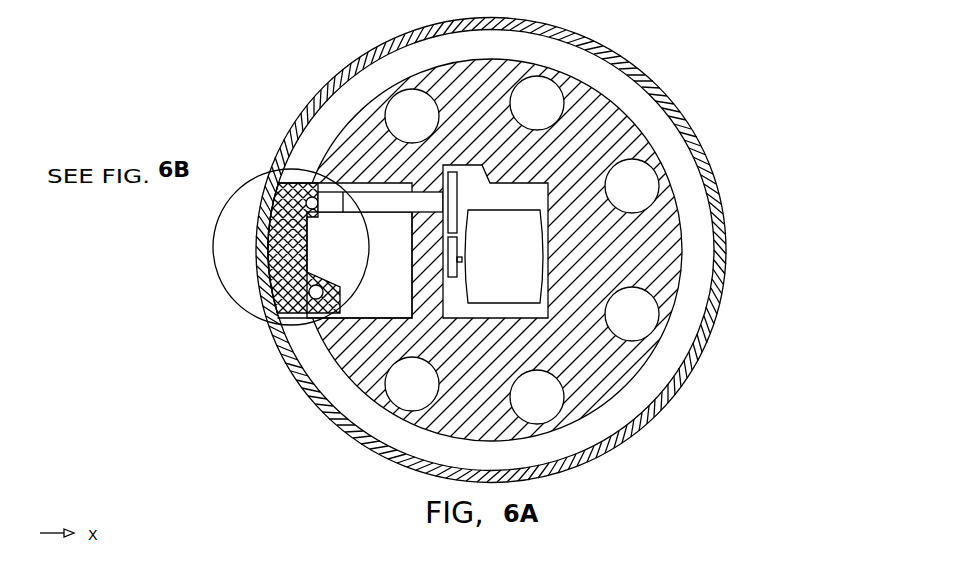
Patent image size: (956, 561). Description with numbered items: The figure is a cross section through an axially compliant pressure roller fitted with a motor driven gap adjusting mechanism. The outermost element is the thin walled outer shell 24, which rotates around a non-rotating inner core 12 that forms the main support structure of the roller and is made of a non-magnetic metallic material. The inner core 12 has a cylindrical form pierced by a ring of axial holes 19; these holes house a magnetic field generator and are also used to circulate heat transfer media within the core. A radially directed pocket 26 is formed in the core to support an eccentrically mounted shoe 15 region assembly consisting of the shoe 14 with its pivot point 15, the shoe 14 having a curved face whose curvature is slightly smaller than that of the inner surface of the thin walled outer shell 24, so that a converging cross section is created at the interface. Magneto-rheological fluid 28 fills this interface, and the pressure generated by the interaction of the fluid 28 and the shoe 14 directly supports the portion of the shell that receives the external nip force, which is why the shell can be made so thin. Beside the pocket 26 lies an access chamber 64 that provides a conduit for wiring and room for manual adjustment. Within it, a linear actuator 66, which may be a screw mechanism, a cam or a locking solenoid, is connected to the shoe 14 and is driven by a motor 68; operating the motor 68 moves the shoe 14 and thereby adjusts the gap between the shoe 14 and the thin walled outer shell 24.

The inner core 12 is at (534, 250).
The shoe 14 is at (221, 250).
The pivot point 15 is at (303, 287).
The axial holes 19 is at (611, 250).
The thin walled outer shell 24 is at (440, 250).
The pockets 26 is at (291, 340).
The magneto-rheological fluid 28 is at (478, 291).
The access chamber 64 is at (594, 321).
The linear actuator 66 is at (327, 173).
The motor 68 is at (636, 328).